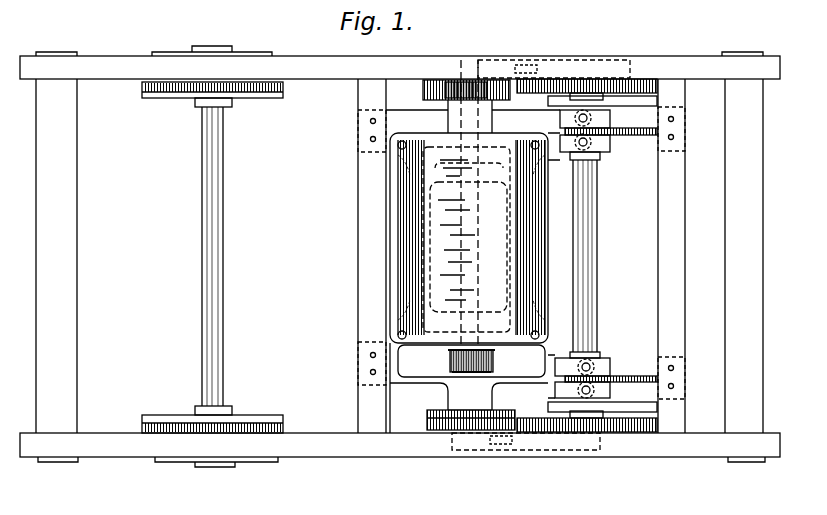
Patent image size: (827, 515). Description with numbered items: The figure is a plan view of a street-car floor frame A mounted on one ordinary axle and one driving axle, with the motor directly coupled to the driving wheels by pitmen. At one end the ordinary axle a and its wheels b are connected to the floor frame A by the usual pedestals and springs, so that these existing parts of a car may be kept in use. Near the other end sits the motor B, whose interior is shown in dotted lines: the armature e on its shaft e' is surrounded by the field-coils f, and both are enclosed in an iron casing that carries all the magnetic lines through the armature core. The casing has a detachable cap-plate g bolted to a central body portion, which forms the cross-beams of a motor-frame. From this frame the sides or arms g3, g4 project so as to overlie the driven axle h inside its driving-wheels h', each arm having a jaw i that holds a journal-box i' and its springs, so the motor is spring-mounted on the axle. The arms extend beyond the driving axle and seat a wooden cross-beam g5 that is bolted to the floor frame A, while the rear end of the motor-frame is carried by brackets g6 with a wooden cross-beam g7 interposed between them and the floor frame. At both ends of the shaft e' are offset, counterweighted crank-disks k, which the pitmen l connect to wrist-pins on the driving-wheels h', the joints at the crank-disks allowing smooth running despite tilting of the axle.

The car-floor frame A is at (400, 256).
The ordinary axle a is at (219, 256).
The wheels b is at (212, 257).
The motor B is at (473, 226).
The armature e is at (468, 237).
The armature shaft e' is at (458, 202).
The field-coils f is at (466, 239).
The cap-plate g is at (470, 297).
The side or arm of motor-frame g3 is at (607, 150).
The side or arm of motor-frame g4 is at (622, 362).
The wooden cross-beam g5 is at (671, 180).
The brackets g6 is at (362, 136).
The wooden cross-beam g7 is at (376, 339).
The driven axle h is at (589, 255).
The driving-wheels h' is at (591, 257).
The jaw i is at (581, 243).
The journal-box i' is at (580, 265).
The crank-disks k is at (447, 88).
The pitmen l is at (567, 70).